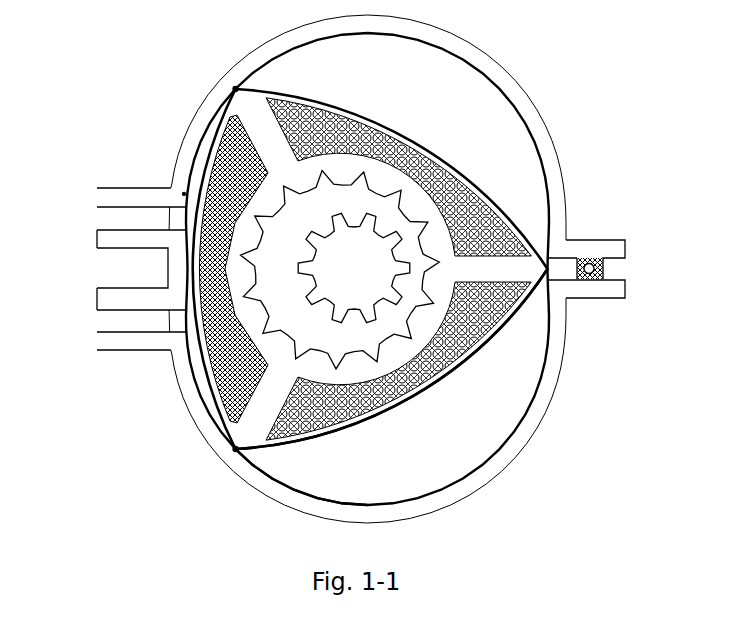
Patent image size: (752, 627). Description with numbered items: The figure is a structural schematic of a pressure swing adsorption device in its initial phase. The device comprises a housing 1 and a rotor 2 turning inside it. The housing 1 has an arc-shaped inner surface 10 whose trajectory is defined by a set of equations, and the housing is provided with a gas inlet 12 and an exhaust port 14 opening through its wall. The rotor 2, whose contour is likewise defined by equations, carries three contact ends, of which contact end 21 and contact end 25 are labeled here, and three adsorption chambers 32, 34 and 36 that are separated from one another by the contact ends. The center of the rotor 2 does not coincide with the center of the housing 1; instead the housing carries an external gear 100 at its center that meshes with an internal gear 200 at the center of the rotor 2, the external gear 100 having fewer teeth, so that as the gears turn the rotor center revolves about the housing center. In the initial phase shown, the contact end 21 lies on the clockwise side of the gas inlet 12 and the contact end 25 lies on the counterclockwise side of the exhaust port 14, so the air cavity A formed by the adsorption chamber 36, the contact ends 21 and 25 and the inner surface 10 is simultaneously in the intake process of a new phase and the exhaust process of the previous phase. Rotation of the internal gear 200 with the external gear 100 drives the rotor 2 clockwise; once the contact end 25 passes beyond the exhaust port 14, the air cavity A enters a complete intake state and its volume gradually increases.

The housing 1 is at (495, 63).
The rotor 2 is at (368, 110).
The arc-shaped inner surface 10 is at (517, 90).
The gas inlet 12 is at (110, 214).
The exhaust port 14 is at (100, 340).
The contact end 21 is at (230, 82).
The contact end 25 is at (233, 447).
The adsorption chamber 32 is at (475, 220).
The adsorption chamber 34 is at (483, 310).
The adsorption chamber 36 is at (217, 160).
The external gear 100 is at (477, 360).
The internal gear 200 is at (433, 385).
The air cavity A is at (182, 192).